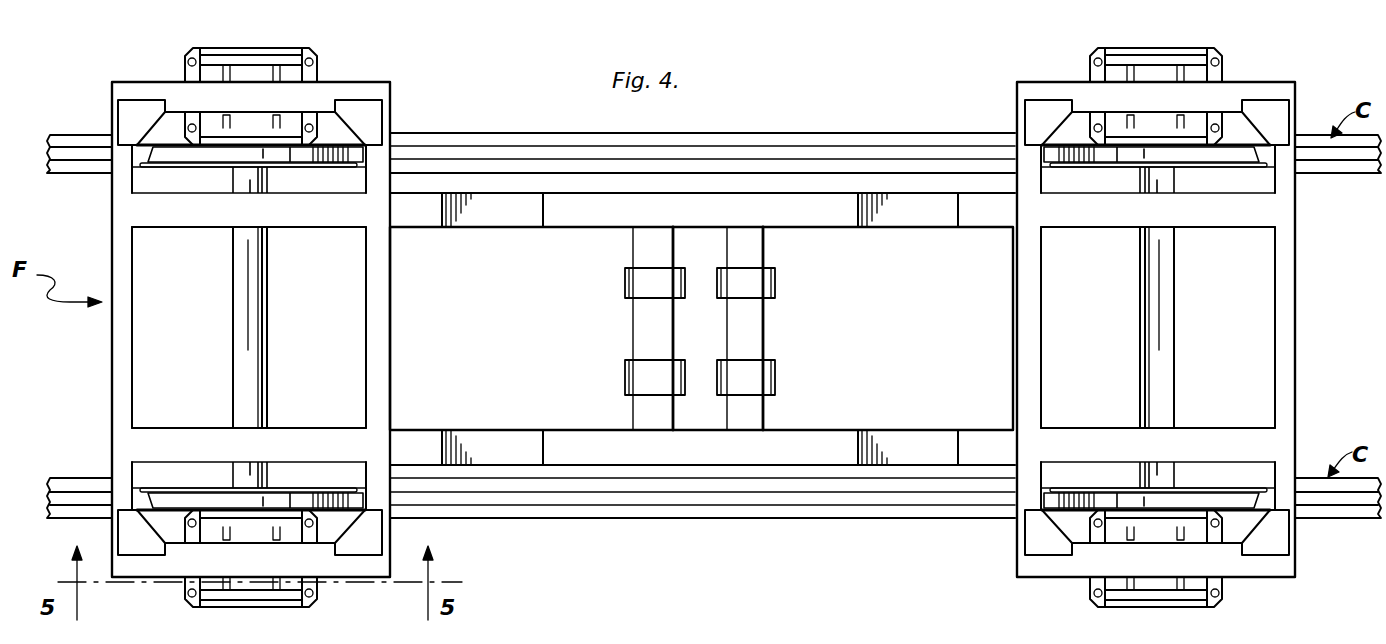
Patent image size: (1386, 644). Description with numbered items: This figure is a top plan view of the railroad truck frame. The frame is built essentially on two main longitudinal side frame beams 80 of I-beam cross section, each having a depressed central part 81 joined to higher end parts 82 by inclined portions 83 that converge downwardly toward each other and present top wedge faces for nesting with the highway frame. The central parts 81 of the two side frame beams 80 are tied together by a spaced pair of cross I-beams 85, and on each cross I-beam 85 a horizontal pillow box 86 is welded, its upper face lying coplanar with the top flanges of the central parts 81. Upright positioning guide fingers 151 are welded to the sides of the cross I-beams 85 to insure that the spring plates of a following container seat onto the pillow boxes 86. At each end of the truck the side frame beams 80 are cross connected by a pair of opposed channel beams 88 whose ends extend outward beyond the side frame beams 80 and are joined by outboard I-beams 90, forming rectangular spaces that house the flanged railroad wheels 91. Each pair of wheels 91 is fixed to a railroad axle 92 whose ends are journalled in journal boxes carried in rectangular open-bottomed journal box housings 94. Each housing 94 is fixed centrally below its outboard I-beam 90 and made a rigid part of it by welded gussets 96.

The main longitudinal side frame beam 80 is at (953, 232).
The central part of side frame beam 81 is at (711, 202).
The higher end part of side frame beam 82 is at (168, 224).
The inclined portion 83 is at (492, 225).
The cross I-beam 85 is at (645, 320).
The pillow box 86 is at (648, 268).
The channel beam 88 is at (122, 344).
The I-beam 90 is at (348, 82).
The flanged railroad wheel 91 is at (315, 157).
The railroad axle 92 is at (262, 290).
The journal box housing 94 is at (258, 66).
The gusset 96 is at (276, 120).
The positioning guide finger 151 is at (677, 282).